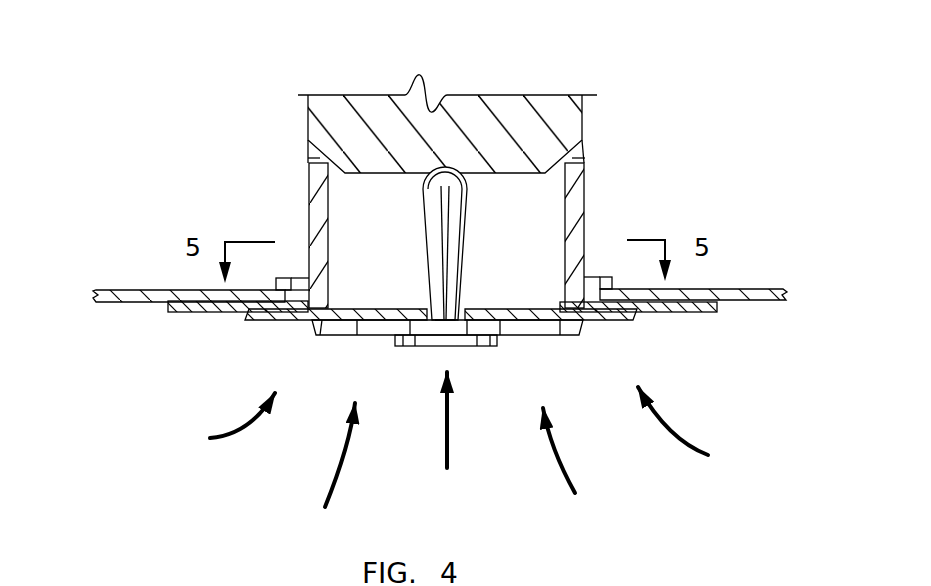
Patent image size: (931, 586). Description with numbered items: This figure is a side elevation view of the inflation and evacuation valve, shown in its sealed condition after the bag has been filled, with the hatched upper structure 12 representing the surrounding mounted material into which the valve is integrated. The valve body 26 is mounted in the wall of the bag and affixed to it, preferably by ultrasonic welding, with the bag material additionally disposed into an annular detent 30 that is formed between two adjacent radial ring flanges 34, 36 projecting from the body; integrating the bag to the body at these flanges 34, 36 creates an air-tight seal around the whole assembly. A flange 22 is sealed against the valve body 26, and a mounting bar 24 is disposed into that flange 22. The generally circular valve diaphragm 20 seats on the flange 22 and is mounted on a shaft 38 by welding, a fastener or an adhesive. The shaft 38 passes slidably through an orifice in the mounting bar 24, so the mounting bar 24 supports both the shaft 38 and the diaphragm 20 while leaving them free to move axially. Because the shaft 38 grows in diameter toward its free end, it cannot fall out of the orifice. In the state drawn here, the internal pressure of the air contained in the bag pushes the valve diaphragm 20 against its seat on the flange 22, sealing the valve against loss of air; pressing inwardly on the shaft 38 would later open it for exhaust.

The mounting block / ceiling structure 12 is at (582, 123).
The valve body 26 is at (588, 188).
The shaft 38 is at (427, 228).
The mounting bar 24 is at (378, 310).
The valve diaphragm 20 is at (548, 335).
The flange 22 is at (250, 313).
The radial ring flange 34 is at (172, 312).
The annular detent 30 is at (290, 280).
The radial ring flange 36 is at (595, 270).